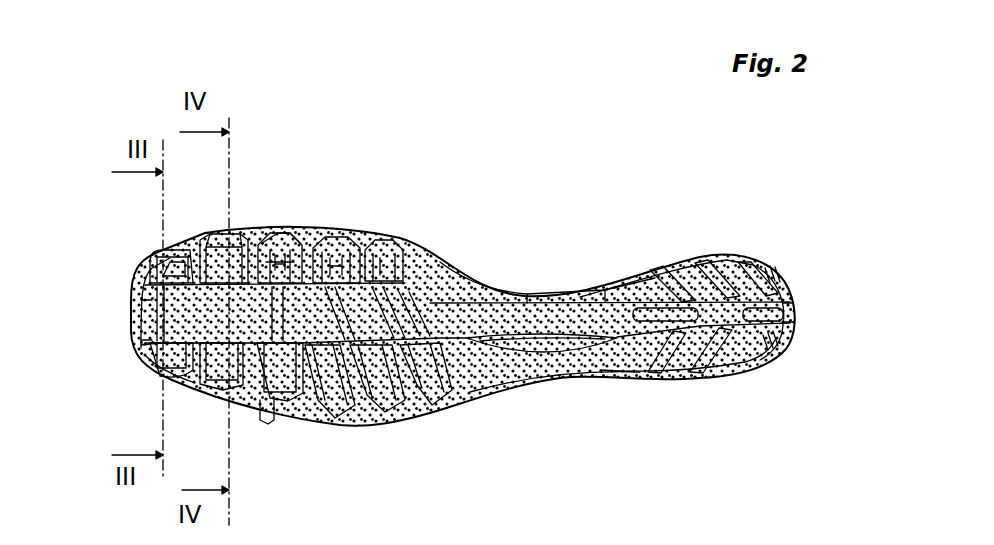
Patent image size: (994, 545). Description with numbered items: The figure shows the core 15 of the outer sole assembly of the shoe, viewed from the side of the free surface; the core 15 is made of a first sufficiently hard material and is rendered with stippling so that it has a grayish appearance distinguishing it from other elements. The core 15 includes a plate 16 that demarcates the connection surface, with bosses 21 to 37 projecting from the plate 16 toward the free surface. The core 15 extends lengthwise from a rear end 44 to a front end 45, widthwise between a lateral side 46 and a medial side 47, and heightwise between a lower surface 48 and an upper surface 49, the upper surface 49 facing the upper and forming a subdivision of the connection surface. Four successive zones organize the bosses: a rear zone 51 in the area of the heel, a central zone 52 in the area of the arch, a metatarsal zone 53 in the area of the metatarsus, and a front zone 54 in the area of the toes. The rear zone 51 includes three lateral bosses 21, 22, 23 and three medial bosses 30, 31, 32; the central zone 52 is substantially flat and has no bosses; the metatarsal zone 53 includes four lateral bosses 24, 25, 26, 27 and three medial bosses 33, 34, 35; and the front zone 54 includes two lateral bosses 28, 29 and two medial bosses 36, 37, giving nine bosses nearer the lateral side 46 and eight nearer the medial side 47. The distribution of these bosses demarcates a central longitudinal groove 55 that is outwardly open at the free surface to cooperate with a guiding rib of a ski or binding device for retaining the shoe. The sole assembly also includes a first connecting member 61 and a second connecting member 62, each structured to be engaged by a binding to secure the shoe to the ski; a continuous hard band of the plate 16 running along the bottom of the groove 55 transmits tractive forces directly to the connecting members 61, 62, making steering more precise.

The core 15 is at (503, 173).
The plate 16 is at (467, 297).
The lateral boss 21 is at (750, 350).
The lateral boss 22 is at (690, 350).
The lateral boss 23 is at (643, 350).
The lateral boss 24 is at (493, 373).
The lateral boss 25 is at (410, 420).
The lateral boss 26 is at (353, 423).
The lateral boss 27 is at (333, 400).
The lateral boss 28 is at (240, 400).
The lateral boss 29 is at (167, 386).
The medial boss 30 is at (747, 273).
The medial boss 31 is at (697, 287).
The medial boss 32 is at (627, 290).
The medial boss 33 is at (380, 247).
The medial boss 34 is at (333, 237).
The medial boss 35 is at (282, 253).
The medial boss 36 is at (233, 260).
The medial boss 37 is at (182, 250).
The rear end 44 is at (793, 307).
The front end 45 is at (128, 300).
The lateral side 46 is at (558, 383).
The medial side 47 is at (487, 297).
The lower surface 48 is at (585, 370).
The upper surface 49 is at (600, 283).
The rear zone 51 is at (727, 257).
The central zone 52 is at (540, 297).
The metatarsal zone 53 is at (308, 240).
The front zone 54 is at (176, 272).
The central longitudinal groove 55 is at (410, 317).
The first connecting member 61 is at (134, 330).
The second connecting member 62 is at (290, 393).